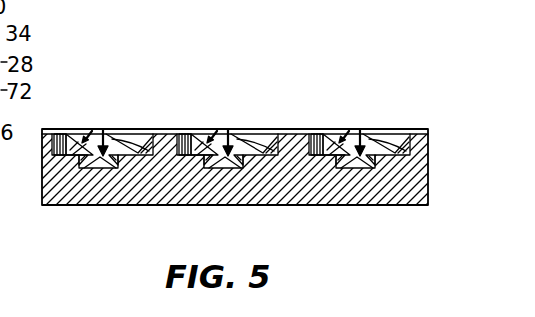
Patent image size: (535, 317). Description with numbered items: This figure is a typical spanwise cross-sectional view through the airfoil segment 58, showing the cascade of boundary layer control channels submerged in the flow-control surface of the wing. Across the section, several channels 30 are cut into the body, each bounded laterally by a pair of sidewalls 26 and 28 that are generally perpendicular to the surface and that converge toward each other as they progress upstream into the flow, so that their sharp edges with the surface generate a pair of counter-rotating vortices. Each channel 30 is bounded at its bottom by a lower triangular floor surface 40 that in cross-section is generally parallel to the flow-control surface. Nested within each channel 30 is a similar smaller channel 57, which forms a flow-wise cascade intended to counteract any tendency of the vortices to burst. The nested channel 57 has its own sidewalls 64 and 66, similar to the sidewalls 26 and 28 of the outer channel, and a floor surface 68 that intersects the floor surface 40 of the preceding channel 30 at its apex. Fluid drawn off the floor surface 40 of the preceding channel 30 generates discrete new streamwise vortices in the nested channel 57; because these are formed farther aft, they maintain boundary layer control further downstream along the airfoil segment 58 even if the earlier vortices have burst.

The sidewall 26 is at (50, 134).
The sidewall 28 is at (144, 131).
The channel 30 is at (87, 133).
The floor surface 40 is at (132, 148).
The nested channel 57 is at (103, 130).
The airfoil segment 58 is at (62, 113).
The sidewall 64 is at (98, 162).
The sidewall 66 is at (128, 150).
The floor surface 68 is at (108, 166).